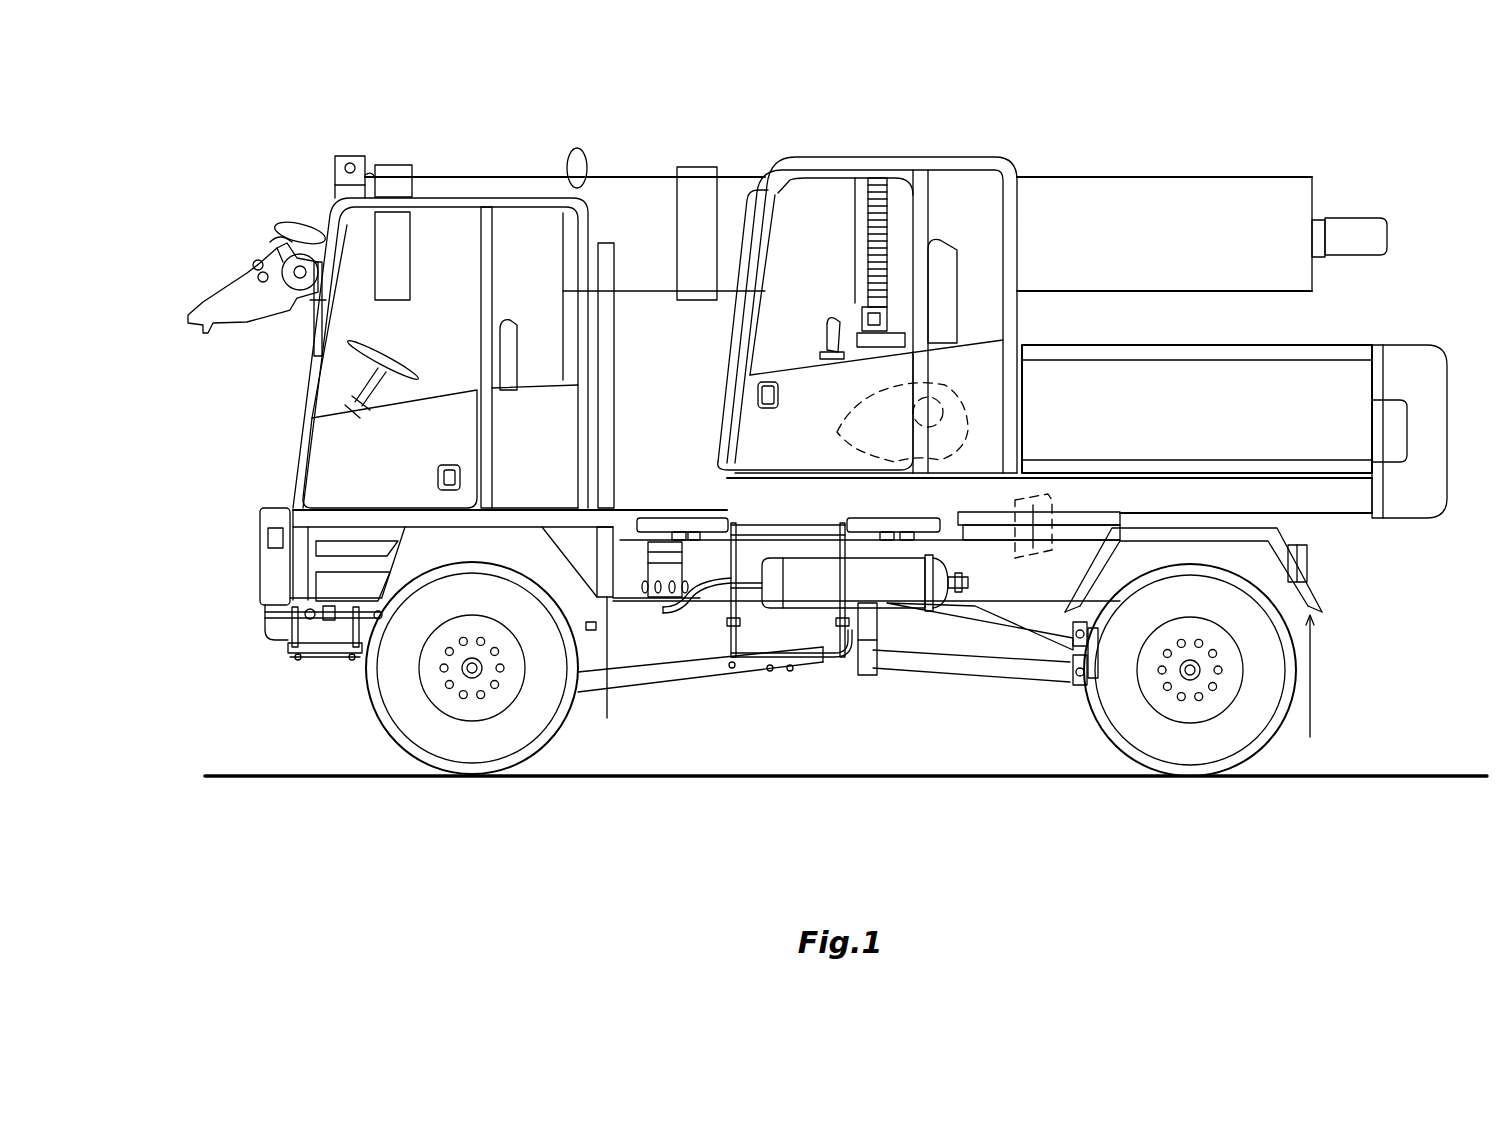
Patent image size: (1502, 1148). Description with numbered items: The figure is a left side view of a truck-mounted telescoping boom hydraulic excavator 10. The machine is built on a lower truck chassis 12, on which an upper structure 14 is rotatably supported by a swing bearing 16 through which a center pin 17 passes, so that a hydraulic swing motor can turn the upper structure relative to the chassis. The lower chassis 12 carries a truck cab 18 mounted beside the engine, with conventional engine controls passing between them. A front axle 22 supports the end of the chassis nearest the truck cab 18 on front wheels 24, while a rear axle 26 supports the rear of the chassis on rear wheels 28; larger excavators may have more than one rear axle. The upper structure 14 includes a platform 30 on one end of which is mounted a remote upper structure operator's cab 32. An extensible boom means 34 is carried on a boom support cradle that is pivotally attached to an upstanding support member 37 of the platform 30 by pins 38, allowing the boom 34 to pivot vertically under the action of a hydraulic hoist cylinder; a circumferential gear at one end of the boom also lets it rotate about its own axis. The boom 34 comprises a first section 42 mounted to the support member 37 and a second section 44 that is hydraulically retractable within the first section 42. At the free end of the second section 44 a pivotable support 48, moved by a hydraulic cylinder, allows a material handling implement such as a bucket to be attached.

The excavator 10 is at (252, 457).
The lower truck chassis 12 is at (251, 553).
The upper structure 14 is at (1388, 322).
The swing bearing 16 is at (1157, 516).
The center pin 17 is at (1013, 560).
The truck cab 18 is at (307, 375).
The front axle 22 is at (352, 665).
The front wheels 24 is at (378, 728).
The rear axle 26 is at (1088, 728).
The rear wheels 28 is at (1267, 748).
The platform 30 is at (1420, 530).
The upper structure operator's cab 32 is at (948, 163).
The extensible boom means 34 is at (620, 165).
The upstanding support member 37 is at (962, 390).
The pins 38 is at (946, 420).
The first boom section 42 is at (1175, 185).
The second boom section 44 is at (368, 150).
The pivotable support 48 is at (305, 210).